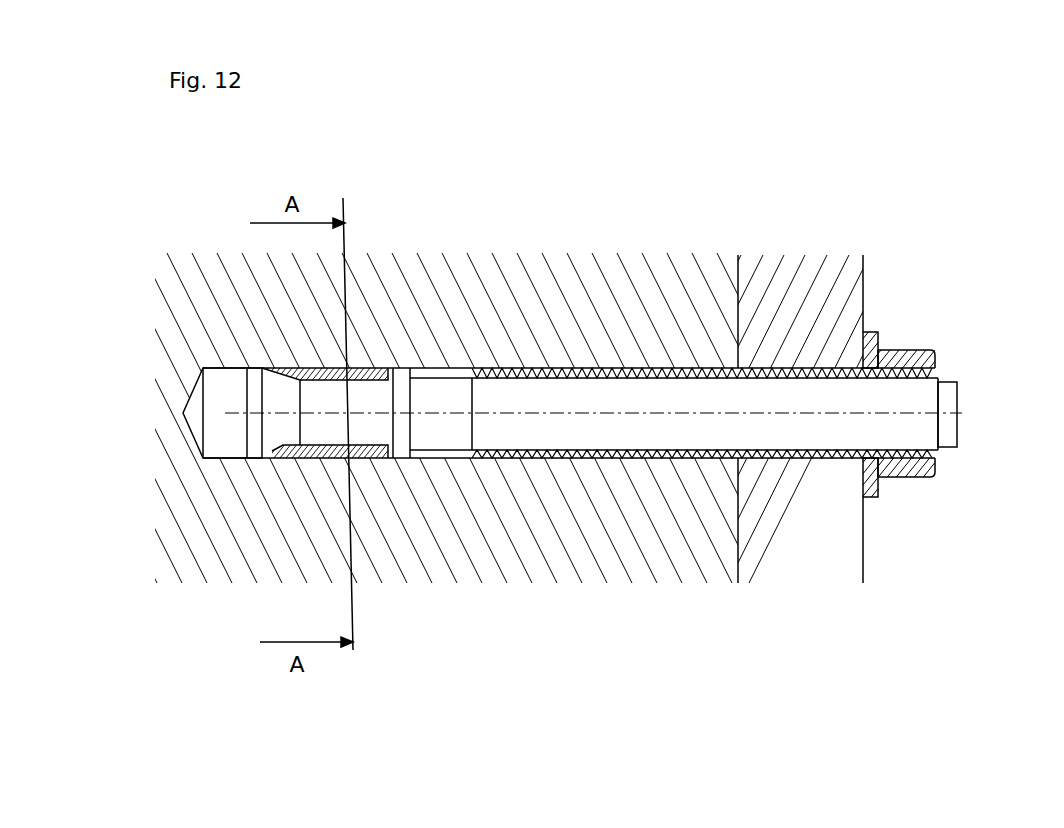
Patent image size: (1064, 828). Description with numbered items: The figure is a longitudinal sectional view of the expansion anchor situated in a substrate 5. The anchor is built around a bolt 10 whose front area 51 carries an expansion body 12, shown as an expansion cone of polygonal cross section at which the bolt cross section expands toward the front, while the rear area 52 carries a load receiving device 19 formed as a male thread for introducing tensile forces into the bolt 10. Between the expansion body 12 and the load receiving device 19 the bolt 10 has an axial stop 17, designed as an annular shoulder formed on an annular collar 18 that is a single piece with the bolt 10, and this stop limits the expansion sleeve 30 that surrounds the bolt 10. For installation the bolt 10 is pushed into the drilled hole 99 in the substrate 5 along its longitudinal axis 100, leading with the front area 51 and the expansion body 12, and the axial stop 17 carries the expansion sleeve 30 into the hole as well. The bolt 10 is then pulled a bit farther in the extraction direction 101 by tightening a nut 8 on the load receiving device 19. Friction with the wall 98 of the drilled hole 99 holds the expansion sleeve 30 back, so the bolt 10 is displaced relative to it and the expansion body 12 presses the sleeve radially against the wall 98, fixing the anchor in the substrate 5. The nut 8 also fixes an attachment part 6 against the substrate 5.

The substrate 5 is at (193, 298).
The attachment part 6 is at (800, 317).
The nut 8 is at (890, 470).
The bolt 10 is at (533, 395).
The expansion body 12 is at (275, 425).
The axial stop 17 is at (394, 445).
The annular collar 18 is at (400, 378).
The load receiving device 19 is at (762, 453).
The expansion sleeve 30 is at (357, 372).
The front area 51 is at (268, 500).
The rear area 52 is at (706, 564).
The wall 98 is at (540, 460).
The drilled hole 99 is at (225, 445).
The longitudinal axis 100 is at (433, 408).
The extraction direction 101 is at (1060, 412).